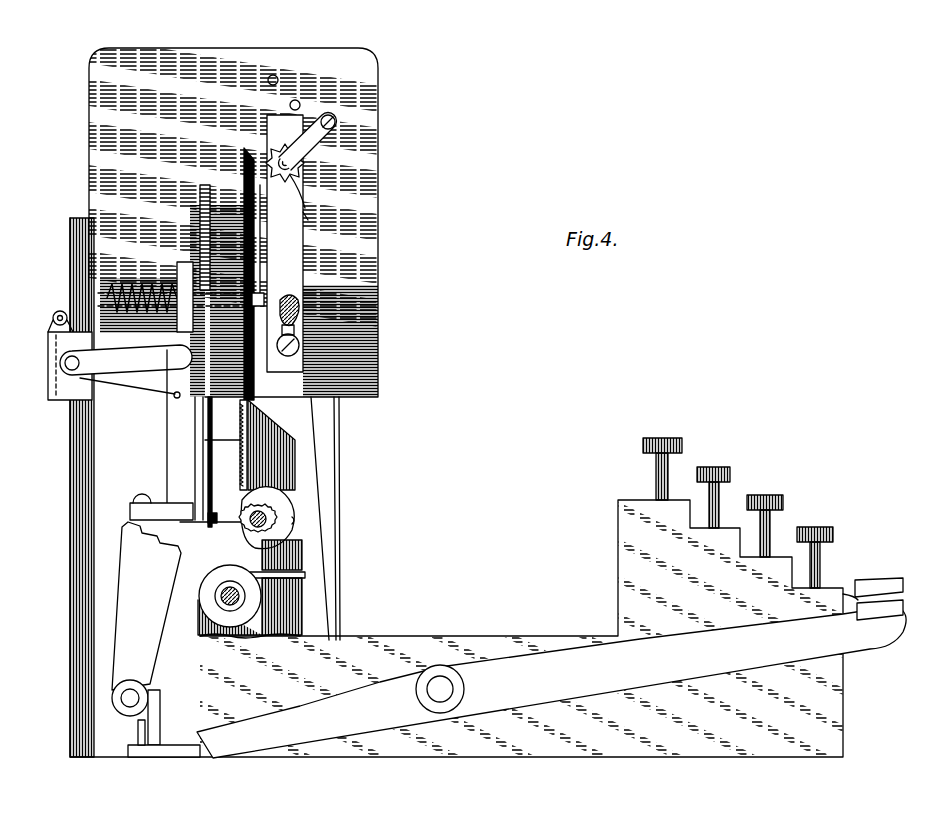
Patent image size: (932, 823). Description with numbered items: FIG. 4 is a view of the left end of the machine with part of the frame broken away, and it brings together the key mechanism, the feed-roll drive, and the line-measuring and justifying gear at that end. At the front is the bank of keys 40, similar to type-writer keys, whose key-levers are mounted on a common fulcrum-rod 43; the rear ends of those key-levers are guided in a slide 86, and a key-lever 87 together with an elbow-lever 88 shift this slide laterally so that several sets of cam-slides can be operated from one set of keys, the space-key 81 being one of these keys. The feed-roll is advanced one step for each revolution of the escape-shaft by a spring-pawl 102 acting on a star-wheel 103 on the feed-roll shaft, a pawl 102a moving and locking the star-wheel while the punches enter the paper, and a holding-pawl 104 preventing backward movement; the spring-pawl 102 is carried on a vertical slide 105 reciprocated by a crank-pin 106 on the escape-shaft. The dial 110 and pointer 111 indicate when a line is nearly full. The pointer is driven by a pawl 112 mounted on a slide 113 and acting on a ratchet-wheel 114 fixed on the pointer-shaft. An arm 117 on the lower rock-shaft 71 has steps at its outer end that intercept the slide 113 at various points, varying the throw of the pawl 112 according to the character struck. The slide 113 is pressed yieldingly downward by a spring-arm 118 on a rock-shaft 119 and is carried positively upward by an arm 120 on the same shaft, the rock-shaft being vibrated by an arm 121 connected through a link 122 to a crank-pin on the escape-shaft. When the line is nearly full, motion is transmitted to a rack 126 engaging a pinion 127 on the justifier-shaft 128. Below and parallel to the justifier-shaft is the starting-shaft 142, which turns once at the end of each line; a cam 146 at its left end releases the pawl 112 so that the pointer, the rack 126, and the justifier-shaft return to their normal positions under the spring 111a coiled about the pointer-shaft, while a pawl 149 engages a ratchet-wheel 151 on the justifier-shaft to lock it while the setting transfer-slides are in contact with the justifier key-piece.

The keys 40 is at (766, 494).
The fulcrum-rod 43 is at (455, 686).
The rock-shaft 71 is at (112, 700).
The space-key 81 is at (876, 582).
The slide 86 is at (160, 716).
The key-lever 87 is at (551, 682).
The elbow-lever 88 is at (143, 732).
The spring-pawl 102 is at (307, 204).
The pawl 102a is at (312, 217).
The star-wheel 103 is at (300, 164).
The holding-pawl 104 is at (308, 113).
The vertical slide 105 is at (286, 243).
The crank-pin 106 is at (290, 300).
The dial 110 is at (243, 155).
The pointer 111 is at (262, 251).
The spring 111a is at (148, 280).
The pawl 112 is at (240, 470).
The slide 113 is at (167, 472).
The ratchet-wheel 114 is at (200, 222).
The arm 117 is at (146, 606).
The spring-arm 118 is at (127, 398).
The rock-shaft 119 is at (58, 390).
The arm 120 is at (126, 360).
The arm 121 is at (52, 320).
The link 122 is at (75, 308).
The rack 126 is at (250, 458).
The pinion 127 is at (275, 513).
The justifier-shaft 128 is at (283, 530).
The starting-shaft 142 is at (233, 605).
The cam 146 is at (255, 594).
The pawl 149 is at (280, 559).
The ratchet-wheel 151 is at (294, 521).